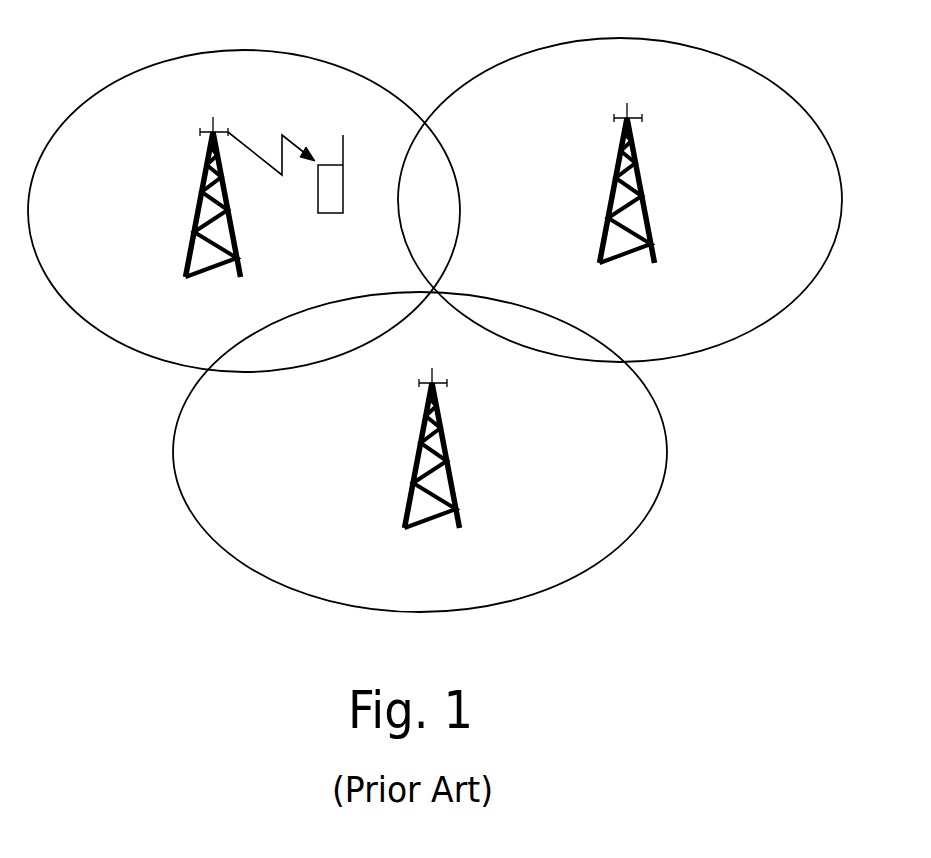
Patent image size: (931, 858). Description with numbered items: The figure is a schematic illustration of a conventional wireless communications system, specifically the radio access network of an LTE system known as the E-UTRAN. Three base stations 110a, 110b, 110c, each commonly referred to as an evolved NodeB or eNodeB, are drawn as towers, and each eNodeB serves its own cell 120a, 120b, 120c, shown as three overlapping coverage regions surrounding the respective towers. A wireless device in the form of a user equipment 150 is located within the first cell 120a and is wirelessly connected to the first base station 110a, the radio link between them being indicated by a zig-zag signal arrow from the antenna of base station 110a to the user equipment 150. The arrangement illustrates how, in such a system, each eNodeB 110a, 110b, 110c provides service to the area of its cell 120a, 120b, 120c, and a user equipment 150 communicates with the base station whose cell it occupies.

The base station 110a is at (186, 252).
The base station 110b is at (653, 247).
The base station 110c is at (457, 510).
The cell 120a is at (146, 153).
The cell 120b is at (766, 160).
The cell 120c is at (306, 556).
The user equipment 150 is at (320, 212).